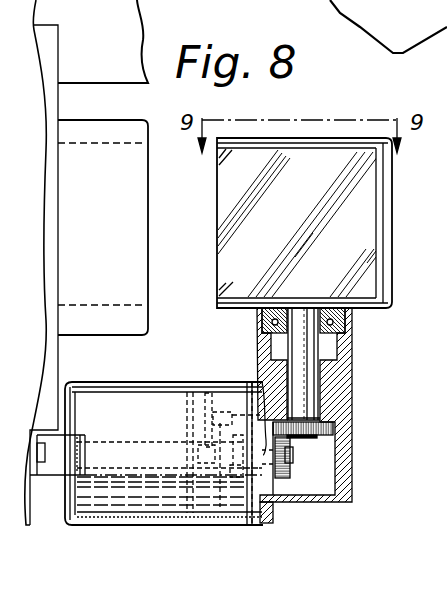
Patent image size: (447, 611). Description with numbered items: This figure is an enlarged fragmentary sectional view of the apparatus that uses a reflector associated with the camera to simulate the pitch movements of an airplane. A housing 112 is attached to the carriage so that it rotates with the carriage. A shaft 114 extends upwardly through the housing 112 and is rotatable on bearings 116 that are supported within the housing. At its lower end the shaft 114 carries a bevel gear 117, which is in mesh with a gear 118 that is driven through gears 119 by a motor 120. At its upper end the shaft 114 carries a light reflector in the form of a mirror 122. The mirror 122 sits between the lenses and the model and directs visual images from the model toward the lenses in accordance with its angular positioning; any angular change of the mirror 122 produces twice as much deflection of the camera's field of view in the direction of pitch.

The housing 112 is at (347, 450).
The shaft 114 is at (305, 388).
The bearings 116 is at (337, 320).
The bevel gear 117 is at (328, 430).
The gear 118 is at (277, 475).
The gears 119 is at (277, 517).
The motor 120 is at (155, 417).
The mirror 122 is at (365, 198).